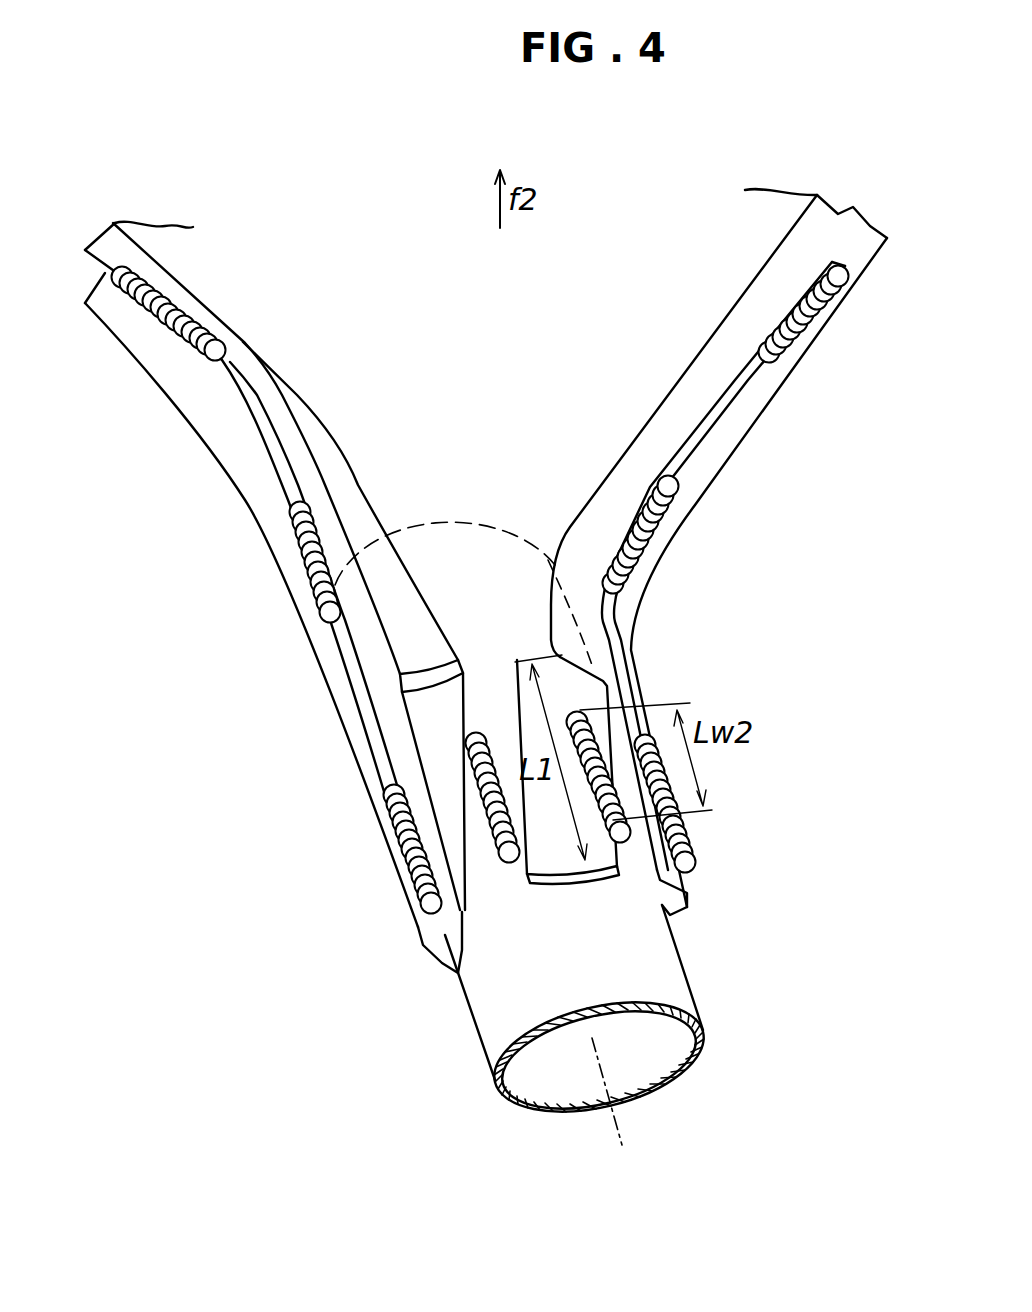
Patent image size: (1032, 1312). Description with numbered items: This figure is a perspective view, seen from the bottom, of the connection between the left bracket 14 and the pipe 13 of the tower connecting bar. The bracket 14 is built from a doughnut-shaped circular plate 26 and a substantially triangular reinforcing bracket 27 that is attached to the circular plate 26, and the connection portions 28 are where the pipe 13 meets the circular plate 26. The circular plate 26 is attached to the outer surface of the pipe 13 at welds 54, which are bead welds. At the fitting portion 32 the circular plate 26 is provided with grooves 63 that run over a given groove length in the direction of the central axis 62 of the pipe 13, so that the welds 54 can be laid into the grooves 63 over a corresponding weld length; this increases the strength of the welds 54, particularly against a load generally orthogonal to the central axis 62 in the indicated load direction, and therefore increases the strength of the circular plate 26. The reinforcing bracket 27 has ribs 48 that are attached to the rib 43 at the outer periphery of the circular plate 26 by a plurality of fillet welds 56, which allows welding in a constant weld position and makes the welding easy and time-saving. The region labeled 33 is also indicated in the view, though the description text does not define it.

The pipe 13 is at (653, 945).
The bracket 14 is at (263, 154).
The doughnut-shaped circular plate 26 is at (362, 197).
The reinforcing bracket 27 is at (229, 515).
The connection portion 28 is at (533, 634).
The fitting portion 32 is at (422, 640).
The joint portion 33 is at (441, 294).
The rib 43 is at (800, 267).
The rib 48 is at (193, 410).
The weld 54 is at (490, 810).
The weld 56 is at (160, 320).
The central axis 62 is at (613, 1118).
The groove 63 is at (467, 707).